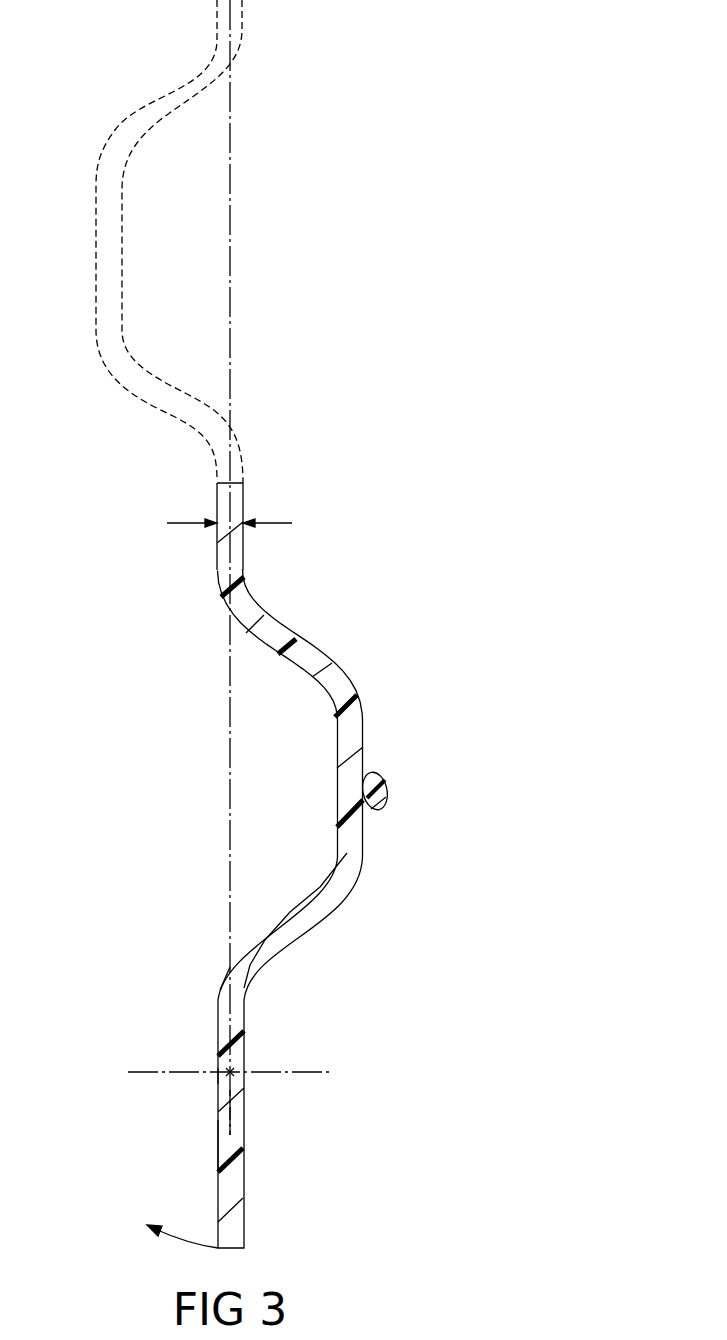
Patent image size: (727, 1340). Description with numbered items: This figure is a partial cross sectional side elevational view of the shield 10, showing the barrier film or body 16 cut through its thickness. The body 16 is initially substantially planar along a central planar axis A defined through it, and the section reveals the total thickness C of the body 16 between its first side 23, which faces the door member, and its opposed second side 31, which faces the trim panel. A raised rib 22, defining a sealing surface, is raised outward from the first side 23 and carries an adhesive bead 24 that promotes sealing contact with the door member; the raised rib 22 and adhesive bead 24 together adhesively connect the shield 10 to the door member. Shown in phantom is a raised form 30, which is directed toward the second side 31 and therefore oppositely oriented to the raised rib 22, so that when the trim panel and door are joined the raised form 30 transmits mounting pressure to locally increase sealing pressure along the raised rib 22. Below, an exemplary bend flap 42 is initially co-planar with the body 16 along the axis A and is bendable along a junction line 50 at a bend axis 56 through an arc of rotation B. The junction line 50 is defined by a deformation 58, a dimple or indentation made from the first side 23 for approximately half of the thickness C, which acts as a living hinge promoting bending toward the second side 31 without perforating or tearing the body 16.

The shield 10 is at (290, 706).
The body 16 is at (237, 495).
The raised rib 22 is at (348, 854).
The first side 23 is at (243, 1198).
The adhesive bead 24 is at (378, 773).
The raised form 30 is at (105, 229).
The second side 31 is at (218, 1144).
The bend flap 42 is at (237, 1130).
The junction line 50 is at (303, 1068).
The bend axis 56 is at (218, 1076).
The deformation 58 is at (232, 1072).
The central planar axis A is at (233, 297).
The arc of rotation B is at (180, 1242).
The total thickness C is at (240, 523).